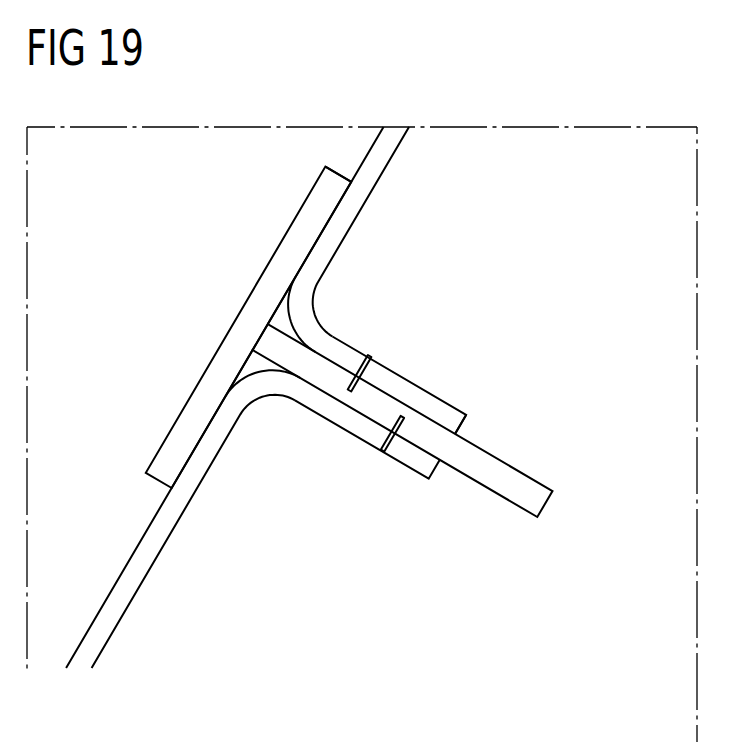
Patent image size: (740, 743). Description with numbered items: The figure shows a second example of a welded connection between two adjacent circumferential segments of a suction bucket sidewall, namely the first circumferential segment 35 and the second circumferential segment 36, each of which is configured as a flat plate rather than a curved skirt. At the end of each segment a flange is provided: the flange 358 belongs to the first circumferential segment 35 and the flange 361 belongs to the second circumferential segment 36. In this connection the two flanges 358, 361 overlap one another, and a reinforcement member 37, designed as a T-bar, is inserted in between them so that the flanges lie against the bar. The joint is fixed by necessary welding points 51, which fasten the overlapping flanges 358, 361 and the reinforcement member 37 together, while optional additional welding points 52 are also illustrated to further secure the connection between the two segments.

The first circumferential segment 35 is at (385, 152).
The second circumferential segment 36 is at (142, 567).
The reinforcement member 37 is at (232, 333).
The flange 358 is at (427, 400).
The flange 361 is at (420, 462).
The welding points 51 is at (370, 357).
The additional welding points 52 is at (351, 181).